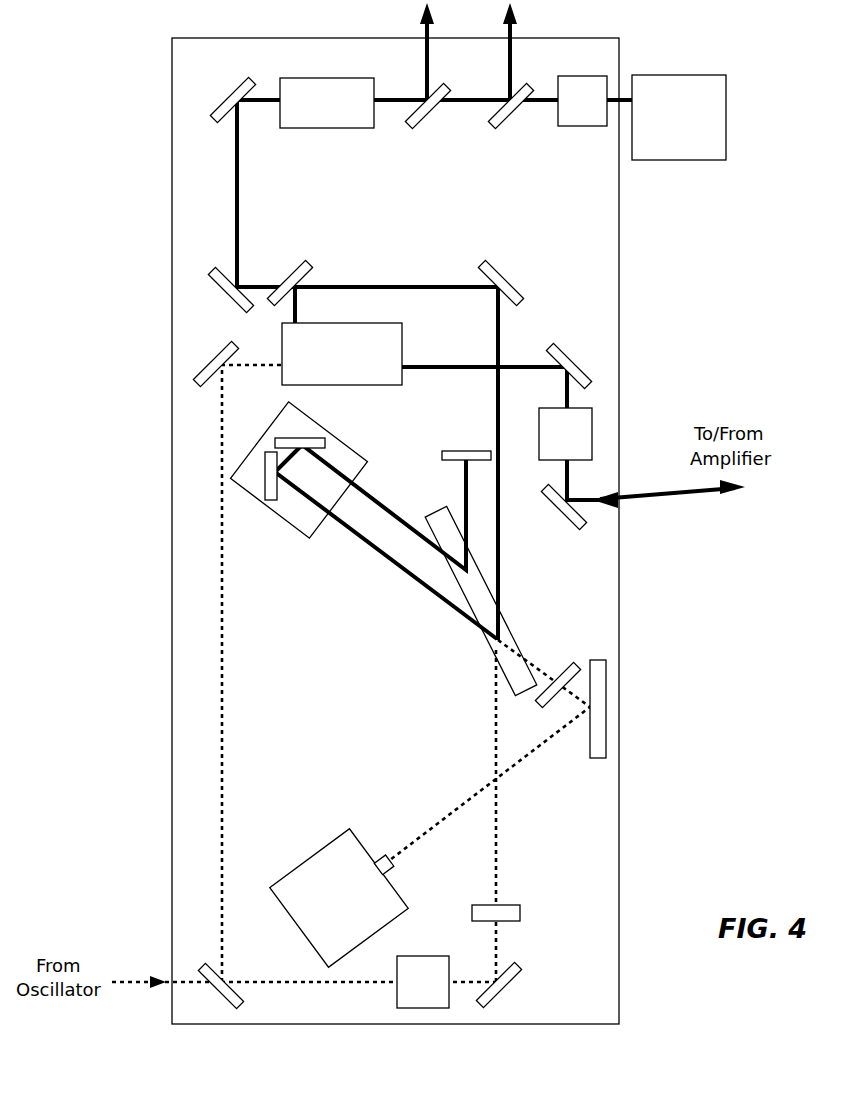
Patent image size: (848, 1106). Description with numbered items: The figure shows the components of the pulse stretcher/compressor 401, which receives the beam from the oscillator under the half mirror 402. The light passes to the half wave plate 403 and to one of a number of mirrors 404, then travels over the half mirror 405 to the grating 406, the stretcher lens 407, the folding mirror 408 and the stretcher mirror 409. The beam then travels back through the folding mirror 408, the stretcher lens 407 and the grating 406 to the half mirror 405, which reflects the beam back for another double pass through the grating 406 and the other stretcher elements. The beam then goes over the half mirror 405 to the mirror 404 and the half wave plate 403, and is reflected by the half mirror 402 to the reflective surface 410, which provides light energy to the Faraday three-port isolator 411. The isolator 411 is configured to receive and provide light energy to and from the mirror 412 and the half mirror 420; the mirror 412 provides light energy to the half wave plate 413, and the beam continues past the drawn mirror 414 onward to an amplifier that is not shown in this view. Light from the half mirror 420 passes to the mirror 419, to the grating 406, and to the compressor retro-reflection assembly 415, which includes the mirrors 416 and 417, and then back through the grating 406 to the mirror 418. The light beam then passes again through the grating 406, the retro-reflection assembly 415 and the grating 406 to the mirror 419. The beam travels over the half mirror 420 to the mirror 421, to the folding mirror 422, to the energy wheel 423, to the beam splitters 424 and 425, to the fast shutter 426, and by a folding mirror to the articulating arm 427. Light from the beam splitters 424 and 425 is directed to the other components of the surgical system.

The pulse stretcher/compressor 401 is at (142, 35).
The half mirror 402 is at (241, 988).
The half wave plate 403 is at (423, 1011).
The mirror 404 is at (512, 986).
The half mirror 405 is at (524, 913).
The grating 406 is at (485, 608).
The stretcher lens 407 is at (574, 650).
The folding mirror 408 is at (635, 709).
The stretcher mirror 409 is at (344, 894).
The reflective surface 410 is at (204, 350).
The Faraday (three port) isolator 411 is at (342, 354).
The mirror 412 is at (580, 361).
The half wave plate 413 is at (565, 434).
The mirror 414 is at (561, 511).
The compressor retro-reflection assembly 415 is at (299, 485).
The mirror 416 is at (256, 474).
The mirror 417 is at (296, 430).
The mirror 418 is at (465, 438).
The mirror 419 is at (517, 278).
The half mirror 420 is at (295, 269).
The mirror 421 is at (204, 265).
The folding mirror 422 is at (222, 93).
The energy wheel 423 is at (327, 103).
The beam splitter 424 is at (423, 119).
The beam splitter 425 is at (508, 119).
The fast shutter 426 is at (582, 116).
The articulating arm 427 is at (679, 117).